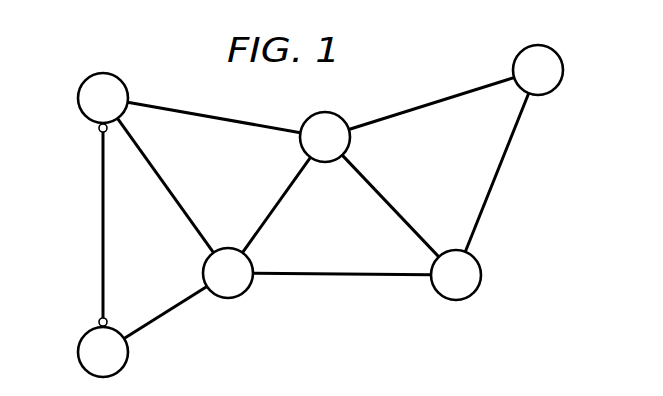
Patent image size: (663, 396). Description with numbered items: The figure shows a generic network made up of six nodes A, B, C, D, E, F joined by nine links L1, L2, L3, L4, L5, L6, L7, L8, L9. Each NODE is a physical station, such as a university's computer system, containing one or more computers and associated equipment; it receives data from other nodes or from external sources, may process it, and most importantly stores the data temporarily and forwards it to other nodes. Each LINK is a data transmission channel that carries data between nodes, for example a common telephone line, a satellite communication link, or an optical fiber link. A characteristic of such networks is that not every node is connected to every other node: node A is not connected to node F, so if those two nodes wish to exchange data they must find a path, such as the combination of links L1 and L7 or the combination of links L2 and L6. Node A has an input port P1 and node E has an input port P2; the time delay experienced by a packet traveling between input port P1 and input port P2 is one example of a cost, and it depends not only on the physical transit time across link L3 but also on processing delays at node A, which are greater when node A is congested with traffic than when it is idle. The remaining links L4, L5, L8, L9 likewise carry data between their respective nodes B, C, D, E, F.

The node A is at (103, 98).
The node B is at (325, 137).
The node C is at (538, 70).
The node D is at (228, 273).
The node E is at (103, 352).
The node F is at (456, 275).
The link L1 is at (214, 110).
The link L2 is at (166, 185).
The link L3 is at (116, 225).
The link L4 is at (165, 314).
The link L5 is at (277, 204).
The link L6 is at (342, 290).
The link L7 is at (390, 206).
The link L8 is at (431, 100).
The link L9 is at (496, 172).
The input port P1 is at (100, 132).
The input port P2 is at (100, 319).
The node NODE is at (228, 298).
The link LINK is at (292, 276).